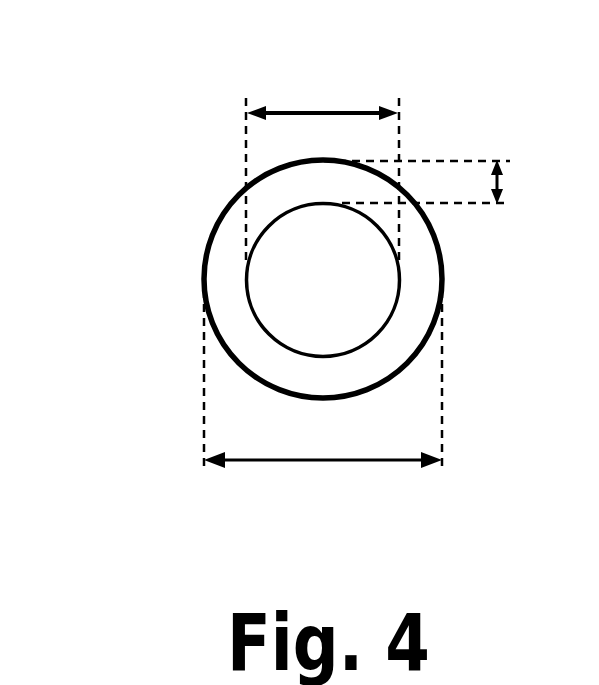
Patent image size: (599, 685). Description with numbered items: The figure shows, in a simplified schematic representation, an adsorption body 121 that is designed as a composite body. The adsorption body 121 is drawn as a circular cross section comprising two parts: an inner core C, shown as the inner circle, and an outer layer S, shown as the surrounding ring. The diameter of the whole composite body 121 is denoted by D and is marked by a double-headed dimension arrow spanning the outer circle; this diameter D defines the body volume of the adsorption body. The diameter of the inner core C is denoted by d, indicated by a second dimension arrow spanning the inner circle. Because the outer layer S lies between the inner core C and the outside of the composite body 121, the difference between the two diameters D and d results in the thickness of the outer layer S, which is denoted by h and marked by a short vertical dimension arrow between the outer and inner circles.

The adsorption body 121 is at (300, 231).
The outer layer S is at (423, 275).
The inner core C is at (270, 292).
The diameter of the inner core d is at (323, 113).
The diameter of the composite body D is at (320, 460).
The thickness of the outer layer h is at (499, 183).